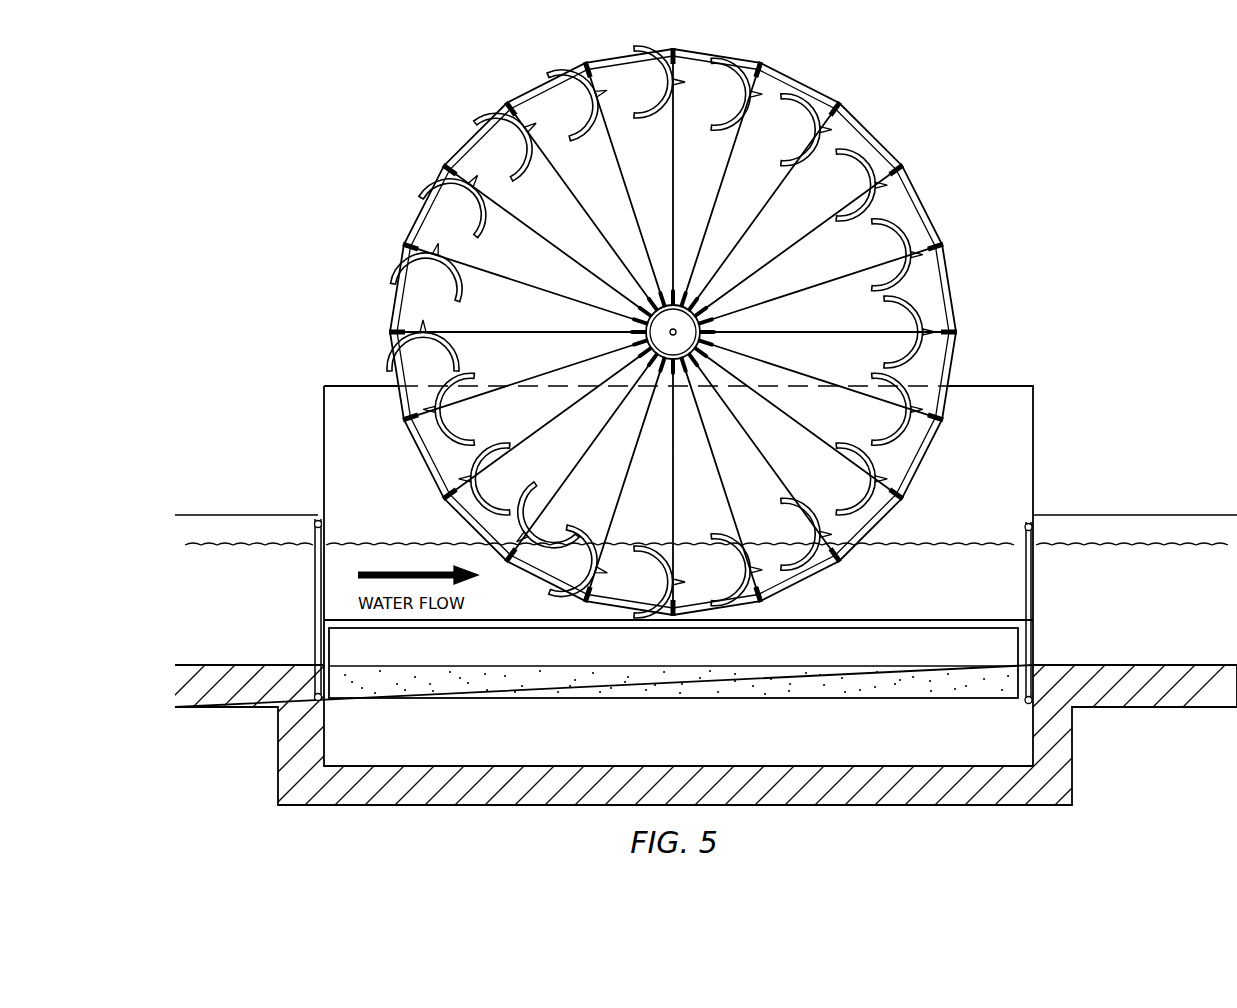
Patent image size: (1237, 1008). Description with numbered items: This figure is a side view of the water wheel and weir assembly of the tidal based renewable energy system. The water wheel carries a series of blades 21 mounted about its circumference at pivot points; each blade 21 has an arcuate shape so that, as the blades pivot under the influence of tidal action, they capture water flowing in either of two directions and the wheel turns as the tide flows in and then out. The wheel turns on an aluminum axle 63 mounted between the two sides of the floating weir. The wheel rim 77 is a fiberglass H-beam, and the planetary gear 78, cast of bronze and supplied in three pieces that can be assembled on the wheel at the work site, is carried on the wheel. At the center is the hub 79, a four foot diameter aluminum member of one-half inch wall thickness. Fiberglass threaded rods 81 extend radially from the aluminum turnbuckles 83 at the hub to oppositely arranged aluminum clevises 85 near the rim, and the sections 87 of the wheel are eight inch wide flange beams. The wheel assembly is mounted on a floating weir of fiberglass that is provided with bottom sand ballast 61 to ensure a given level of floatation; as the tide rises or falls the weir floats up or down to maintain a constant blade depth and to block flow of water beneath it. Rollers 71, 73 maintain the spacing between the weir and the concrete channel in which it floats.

The blades 21 is at (902, 360).
The sand ballast 61 is at (933, 690).
The axle 63 is at (673, 335).
The roller 71 is at (318, 520).
The roller 73 is at (318, 702).
The wheel rim 77 is at (952, 268).
The planetary gear 78 is at (912, 200).
The hub 79 is at (636, 325).
The threaded rods 81 is at (860, 273).
The turnbuckles 83 is at (708, 330).
The clevis 85 is at (898, 258).
The sections 87 is at (956, 355).